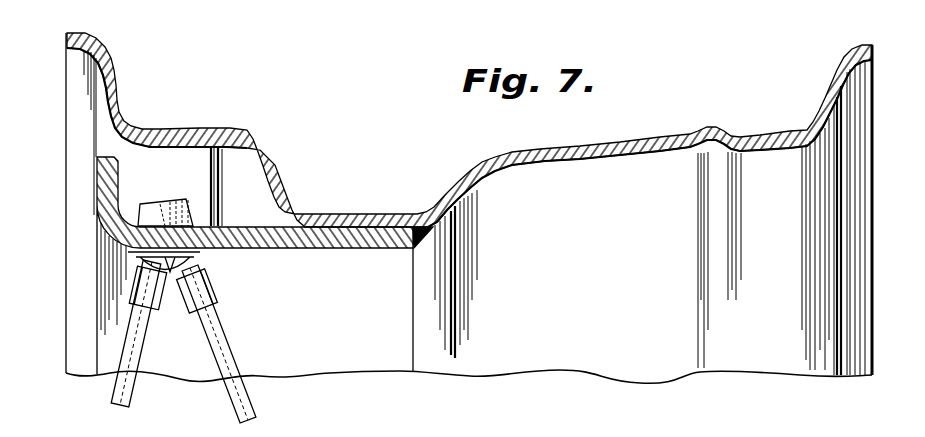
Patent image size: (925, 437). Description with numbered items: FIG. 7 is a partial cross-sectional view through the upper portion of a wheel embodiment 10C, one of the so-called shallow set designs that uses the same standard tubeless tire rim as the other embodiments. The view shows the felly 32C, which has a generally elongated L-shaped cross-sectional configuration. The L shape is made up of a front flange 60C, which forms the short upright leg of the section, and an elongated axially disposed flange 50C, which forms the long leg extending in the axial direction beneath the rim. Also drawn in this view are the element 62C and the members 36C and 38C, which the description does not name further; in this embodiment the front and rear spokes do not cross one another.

The wheel embodiment 10C is at (155, 60).
The felly 32C is at (270, 207).
The elongated axially disposed flange 50C is at (360, 233).
The front flange 60C is at (98, 200).
The clamp bracket 62C is at (140, 258).
The first clamp leg 36C is at (135, 347).
The second clamp leg 38C is at (218, 347).